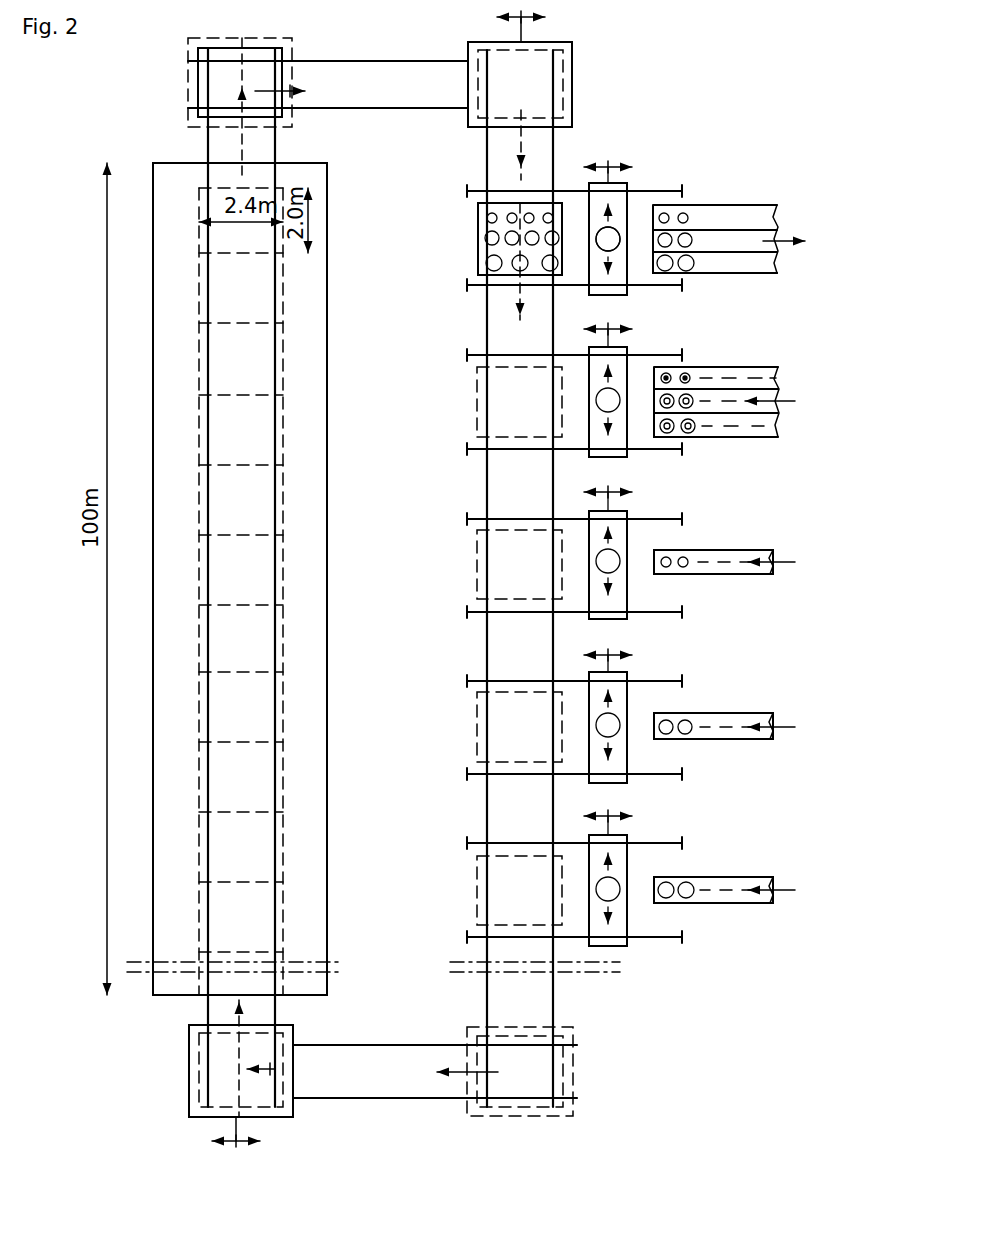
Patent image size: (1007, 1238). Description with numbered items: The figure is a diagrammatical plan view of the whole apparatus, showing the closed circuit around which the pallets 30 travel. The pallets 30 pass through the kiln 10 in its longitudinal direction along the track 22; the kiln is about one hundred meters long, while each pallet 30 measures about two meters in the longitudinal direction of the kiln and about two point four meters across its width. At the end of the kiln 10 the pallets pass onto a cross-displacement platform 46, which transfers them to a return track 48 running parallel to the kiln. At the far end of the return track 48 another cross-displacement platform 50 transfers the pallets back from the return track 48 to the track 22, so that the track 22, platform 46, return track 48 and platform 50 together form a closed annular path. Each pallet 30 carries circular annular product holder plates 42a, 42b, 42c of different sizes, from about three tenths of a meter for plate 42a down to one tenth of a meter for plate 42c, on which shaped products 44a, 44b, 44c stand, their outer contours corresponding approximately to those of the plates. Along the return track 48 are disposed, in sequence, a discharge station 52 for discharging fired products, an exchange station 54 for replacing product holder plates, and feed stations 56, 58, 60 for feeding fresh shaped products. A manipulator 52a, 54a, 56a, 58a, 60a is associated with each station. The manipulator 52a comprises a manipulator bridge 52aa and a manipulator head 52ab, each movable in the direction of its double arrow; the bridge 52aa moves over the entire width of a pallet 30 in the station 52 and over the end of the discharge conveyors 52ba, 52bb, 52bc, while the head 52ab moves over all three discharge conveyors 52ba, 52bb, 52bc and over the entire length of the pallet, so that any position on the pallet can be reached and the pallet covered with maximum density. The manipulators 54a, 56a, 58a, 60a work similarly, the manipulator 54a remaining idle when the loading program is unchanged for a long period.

The kiln 10 is at (336, 210).
The track 22 is at (208, 140).
The pallet 30 is at (246, 46).
The product holder plate 42a is at (690, 432).
The product holder plate 42b is at (692, 403).
The product holder plate 42c is at (687, 377).
The shaped product 44a is at (490, 265).
The shaped product 44b is at (488, 238).
The shaped product 44c is at (487, 218).
The cross-displacement platform 46 is at (294, 46).
The return track 48 is at (553, 330).
The cross-displacement platform 50 is at (195, 1075).
The discharge station 52 is at (632, 180).
The manipulator 52a is at (600, 207).
The manipulator bridge 52aa is at (595, 272).
The manipulator head 52ab is at (614, 236).
The discharge conveyor 52ba is at (748, 213).
The discharge conveyor 52bb is at (755, 245).
The discharge conveyor 52bc is at (742, 278).
The exchange station 54 is at (632, 346).
The manipulator 54a is at (598, 427).
The feed station 56 is at (674, 536).
The manipulator 56a is at (623, 595).
The feed station 58 is at (660, 699).
The manipulator 58a is at (623, 757).
The feed station 60 is at (670, 865).
The manipulator 60a is at (623, 922).